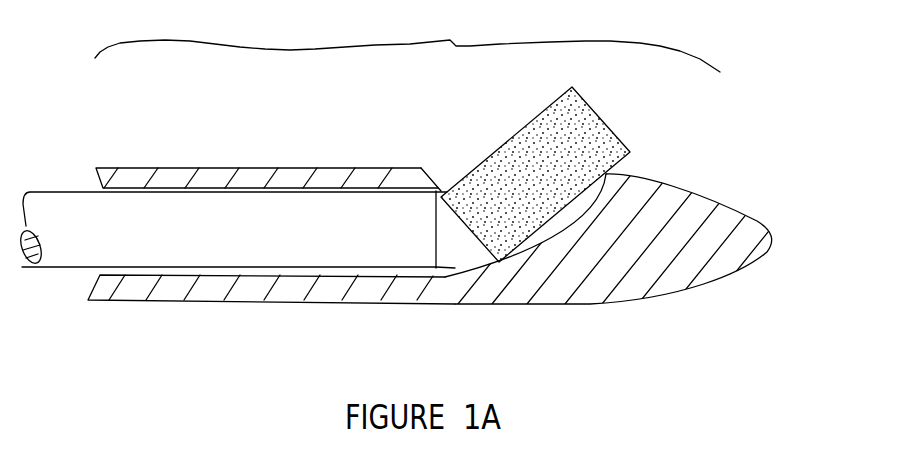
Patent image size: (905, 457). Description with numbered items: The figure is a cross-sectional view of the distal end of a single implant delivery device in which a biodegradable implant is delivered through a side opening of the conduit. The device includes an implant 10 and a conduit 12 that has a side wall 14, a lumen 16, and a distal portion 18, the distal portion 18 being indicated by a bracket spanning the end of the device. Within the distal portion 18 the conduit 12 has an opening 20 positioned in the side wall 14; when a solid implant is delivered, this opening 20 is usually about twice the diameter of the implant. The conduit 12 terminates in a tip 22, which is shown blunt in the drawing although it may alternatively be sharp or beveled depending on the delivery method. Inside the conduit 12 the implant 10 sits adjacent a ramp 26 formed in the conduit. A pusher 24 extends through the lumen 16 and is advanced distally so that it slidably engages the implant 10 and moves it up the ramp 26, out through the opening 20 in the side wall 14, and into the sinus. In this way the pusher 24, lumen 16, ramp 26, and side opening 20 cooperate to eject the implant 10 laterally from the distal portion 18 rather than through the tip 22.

The implant 10 is at (603, 140).
The conduit 12 is at (271, 200).
The side wall 14 is at (293, 167).
The lumen 16 is at (458, 267).
The distal portion 18 is at (407, 39).
The opening 20 is at (444, 190).
The tip 22 is at (764, 247).
The pusher 24 is at (71, 250).
The ramp 26 is at (553, 240).